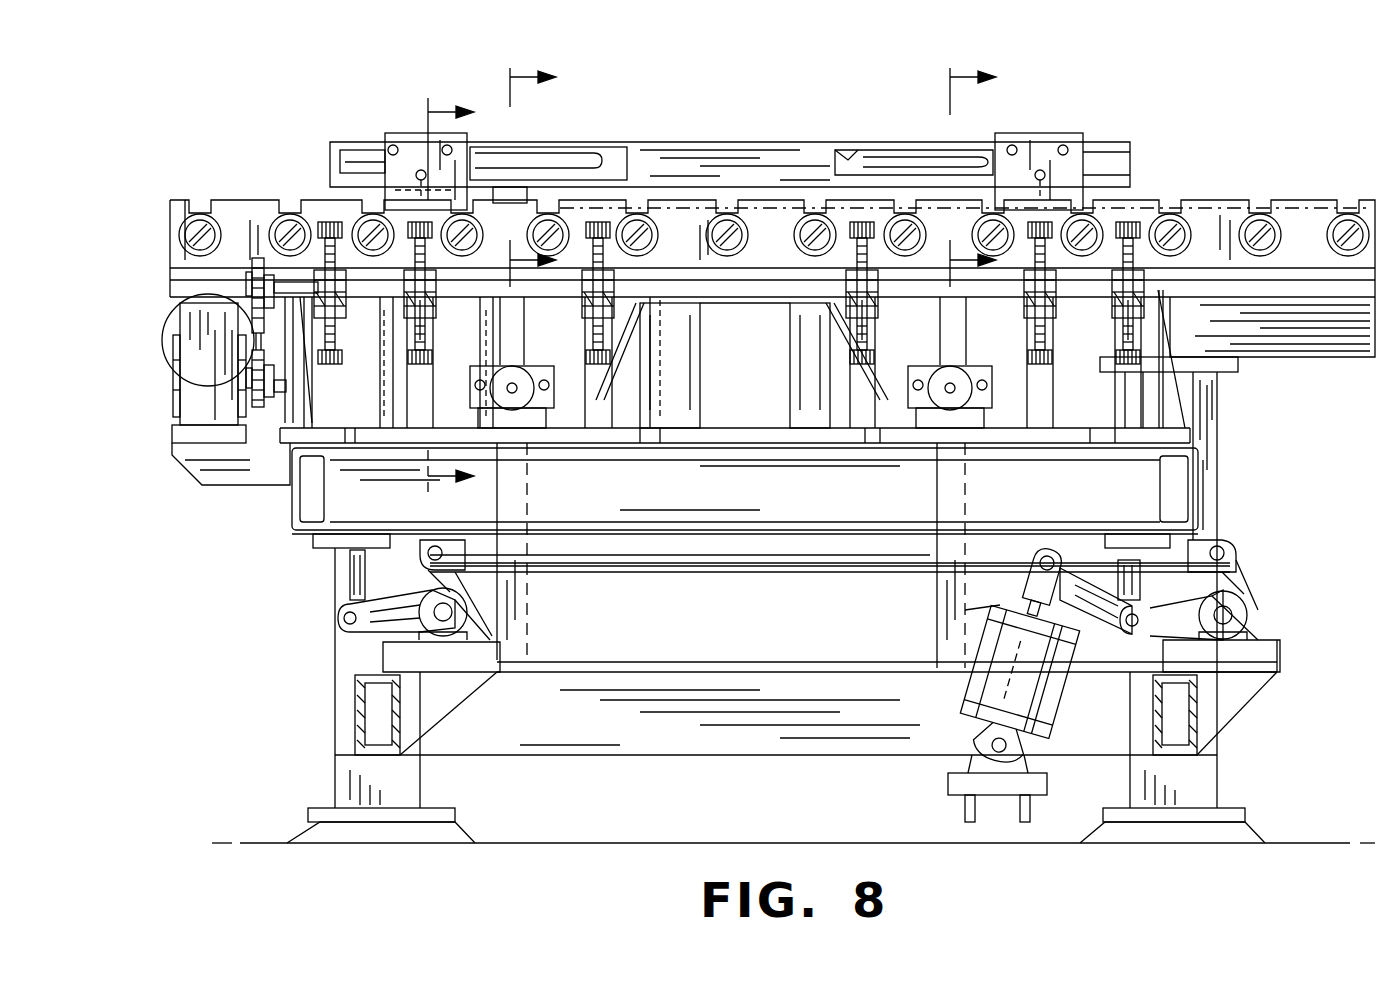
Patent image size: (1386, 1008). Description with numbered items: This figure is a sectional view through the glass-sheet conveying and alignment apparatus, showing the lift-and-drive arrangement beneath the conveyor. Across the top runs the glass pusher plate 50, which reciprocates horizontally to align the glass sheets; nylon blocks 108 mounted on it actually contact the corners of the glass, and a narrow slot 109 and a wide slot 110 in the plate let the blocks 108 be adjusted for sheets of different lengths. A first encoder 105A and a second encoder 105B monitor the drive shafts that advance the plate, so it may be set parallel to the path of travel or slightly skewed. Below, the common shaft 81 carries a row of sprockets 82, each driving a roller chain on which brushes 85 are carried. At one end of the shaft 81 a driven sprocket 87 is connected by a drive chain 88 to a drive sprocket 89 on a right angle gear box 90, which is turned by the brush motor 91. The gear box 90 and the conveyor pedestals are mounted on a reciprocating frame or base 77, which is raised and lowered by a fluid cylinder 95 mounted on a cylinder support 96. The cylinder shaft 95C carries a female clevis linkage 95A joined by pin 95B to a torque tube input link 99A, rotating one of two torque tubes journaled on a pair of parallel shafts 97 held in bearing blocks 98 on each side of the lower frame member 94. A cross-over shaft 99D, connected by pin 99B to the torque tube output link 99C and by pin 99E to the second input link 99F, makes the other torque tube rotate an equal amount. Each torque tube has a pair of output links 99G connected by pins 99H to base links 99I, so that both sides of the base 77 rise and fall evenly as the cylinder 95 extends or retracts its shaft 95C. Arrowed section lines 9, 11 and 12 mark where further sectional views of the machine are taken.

The glass pusher plate 50 is at (686, 160).
The nylon blocks 108 is at (386, 142).
The wide slot 110 is at (848, 158).
The narrow slot 109 is at (912, 160).
The brush 85 is at (858, 222).
The sprocket 82 is at (432, 282).
The driven sprocket 87 is at (254, 275).
The drive chain 88 is at (262, 330).
The drive sprocket 89 is at (270, 400).
The right angle gear box 90 is at (203, 410).
The brush motor 91 is at (172, 322).
The shaft 81 is at (733, 300).
The first encoder 105A is at (520, 398).
The second encoder 105B is at (948, 400).
The reciprocating frame or base 77 is at (660, 500).
The pin 99E is at (432, 548).
The pin 99B is at (1218, 548).
The torque tube output link 99C is at (1240, 590).
The second input link 99F is at (455, 577).
The cross-over shaft 99D is at (740, 566).
The torque tube input link 99A is at (1086, 572).
The output links 99G is at (360, 630).
The pins 99H is at (344, 618).
The base links 99I is at (350, 568).
The shafts 97 is at (440, 620).
The bearing blocks 98 is at (470, 620).
The fluid cylinder 95 is at (988, 690).
The female clevis linkage 95A is at (1040, 585).
The pin 95B is at (1040, 548).
The shaft of fluid cylinder 95C is at (1000, 605).
The cylinder support 96 is at (948, 782).
The lower frame member 94 is at (602, 740).
The section line 9 is at (433, 294).
The section line 11 is at (515, 166).
The section line 12 is at (953, 166).